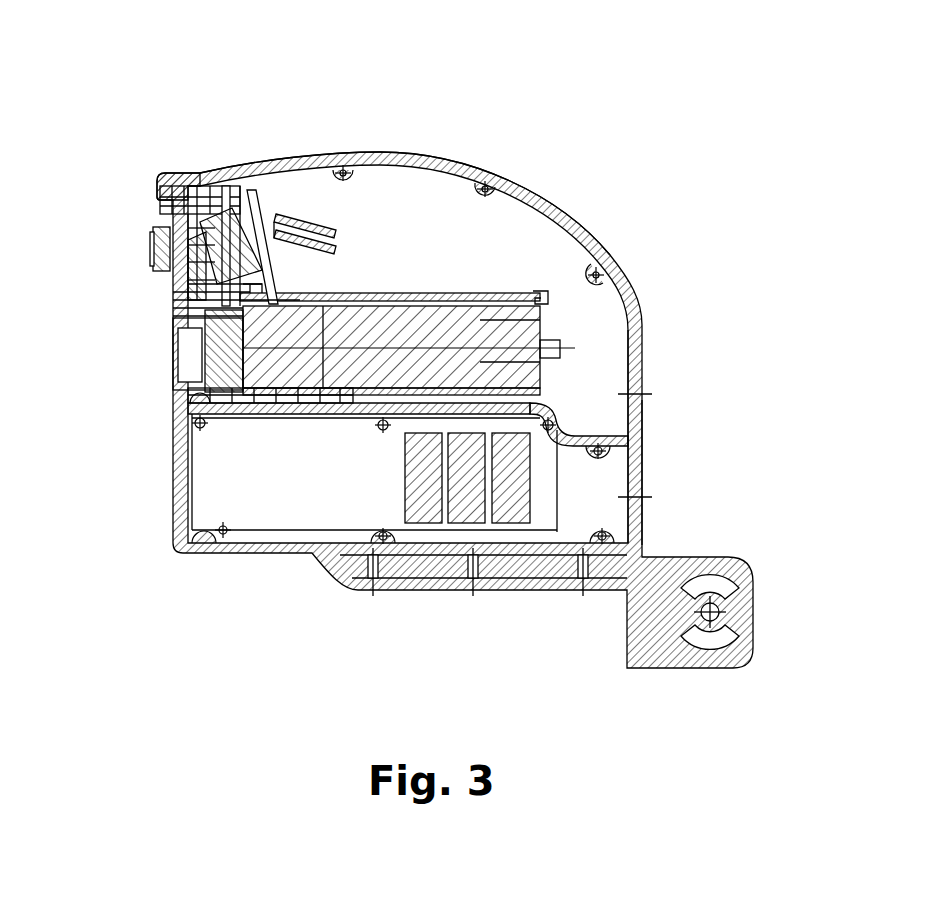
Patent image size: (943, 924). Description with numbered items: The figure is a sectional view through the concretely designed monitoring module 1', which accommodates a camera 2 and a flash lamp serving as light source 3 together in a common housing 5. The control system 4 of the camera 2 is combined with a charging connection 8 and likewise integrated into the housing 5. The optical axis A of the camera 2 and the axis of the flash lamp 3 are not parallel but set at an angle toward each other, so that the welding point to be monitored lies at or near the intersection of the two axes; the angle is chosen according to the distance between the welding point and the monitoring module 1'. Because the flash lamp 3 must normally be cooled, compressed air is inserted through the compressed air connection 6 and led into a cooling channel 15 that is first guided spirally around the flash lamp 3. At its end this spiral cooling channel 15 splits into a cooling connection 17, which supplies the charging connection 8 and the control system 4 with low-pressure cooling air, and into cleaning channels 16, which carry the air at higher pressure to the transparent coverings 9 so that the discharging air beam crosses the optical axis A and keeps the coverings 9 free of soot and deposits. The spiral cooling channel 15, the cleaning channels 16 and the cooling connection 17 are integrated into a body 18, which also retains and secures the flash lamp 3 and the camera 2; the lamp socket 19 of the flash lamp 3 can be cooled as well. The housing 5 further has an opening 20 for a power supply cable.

The monitoring module 1' is at (476, 354).
The camera 2 is at (227, 182).
The flash lamp 3 is at (298, 330).
The control system 4 is at (223, 485).
The housing 5 is at (353, 168).
The compressed air connection 6 is at (645, 393).
The charging connection 8 is at (373, 493).
The transparent covering 9 is at (165, 250).
The cooling channel 15 is at (275, 240).
The cleaning channel 16 is at (205, 318).
The cooling connection 17 is at (238, 413).
The body 18 is at (167, 172).
The lamp socket 19 is at (490, 297).
The opening for a power supply cable 20 is at (644, 485).
The optical axis A is at (212, 302).